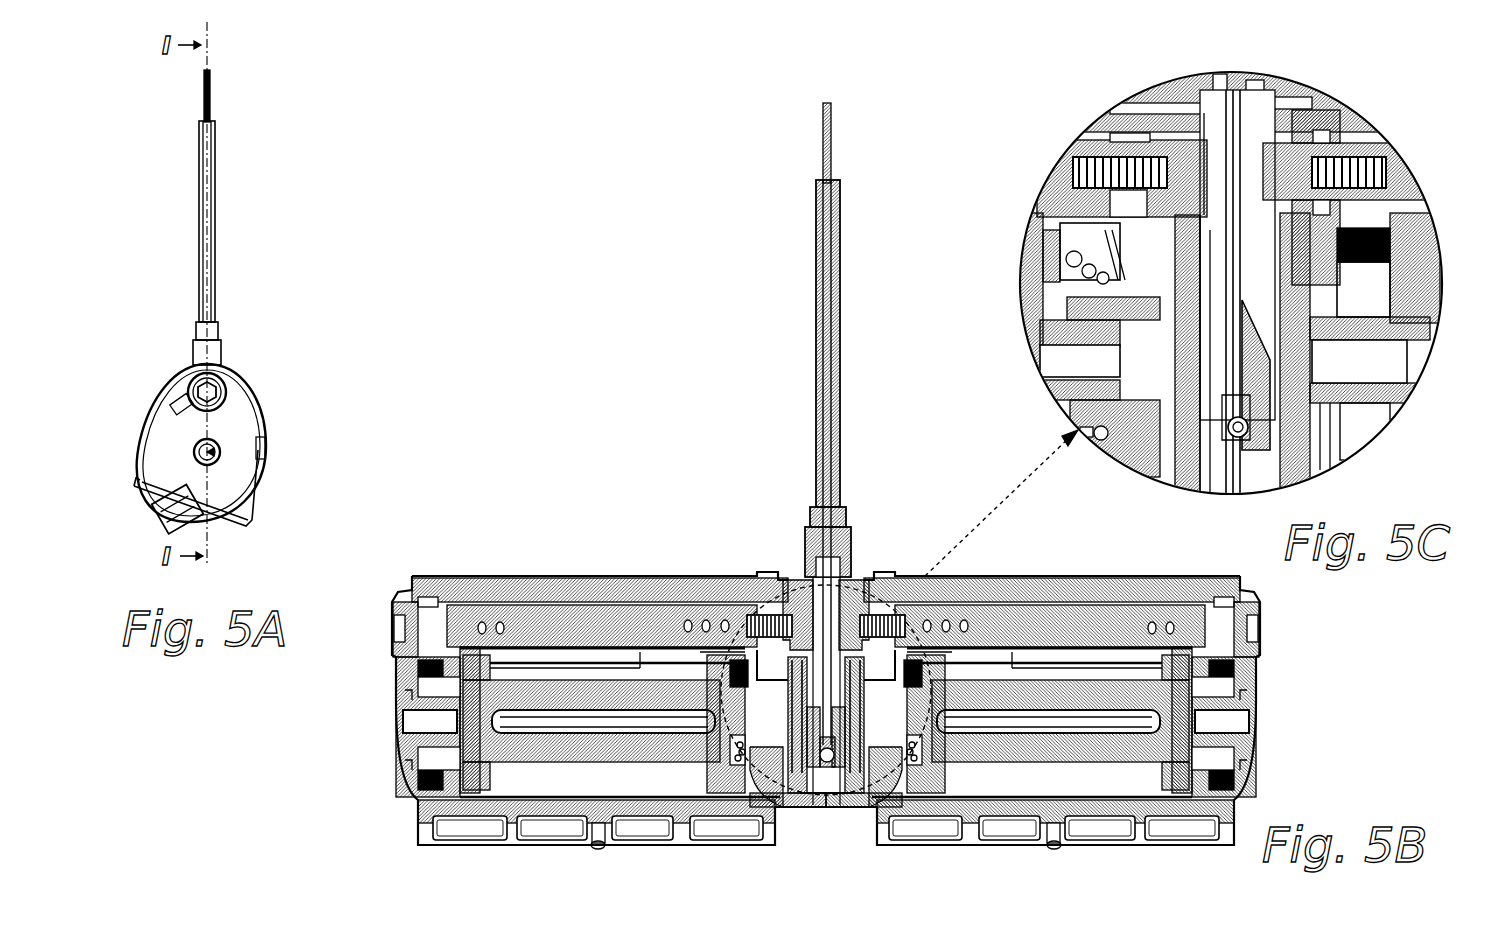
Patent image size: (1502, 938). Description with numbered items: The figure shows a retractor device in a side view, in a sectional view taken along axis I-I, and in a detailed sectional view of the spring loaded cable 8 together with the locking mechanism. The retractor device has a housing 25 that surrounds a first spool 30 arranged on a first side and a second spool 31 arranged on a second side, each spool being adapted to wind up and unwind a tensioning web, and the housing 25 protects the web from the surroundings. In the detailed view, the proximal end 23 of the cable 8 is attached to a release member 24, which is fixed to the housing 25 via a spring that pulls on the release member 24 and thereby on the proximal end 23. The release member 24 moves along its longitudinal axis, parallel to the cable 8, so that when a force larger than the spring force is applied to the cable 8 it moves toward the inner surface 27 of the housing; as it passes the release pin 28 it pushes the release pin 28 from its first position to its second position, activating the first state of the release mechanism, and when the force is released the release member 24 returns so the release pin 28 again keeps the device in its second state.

In FIG. 5C, the cable 8 is at (1243, 122).
In FIG. 5C, the proximal end 23 is at (1237, 425).
In FIG. 5C, the release member 24 is at (1205, 355).
In FIG. 5B, the housing 25 is at (806, 806).
In FIG. 5C, the inner surface 27 is at (1272, 118).
In FIG. 5B, the release pin 28 is at (790, 582).
In FIG. 5C, the release pin 28 is at (1165, 122).
In FIG. 5B, the first spool 30 is at (520, 695).
In FIG. 5B, the second spool 31 is at (1040, 695).